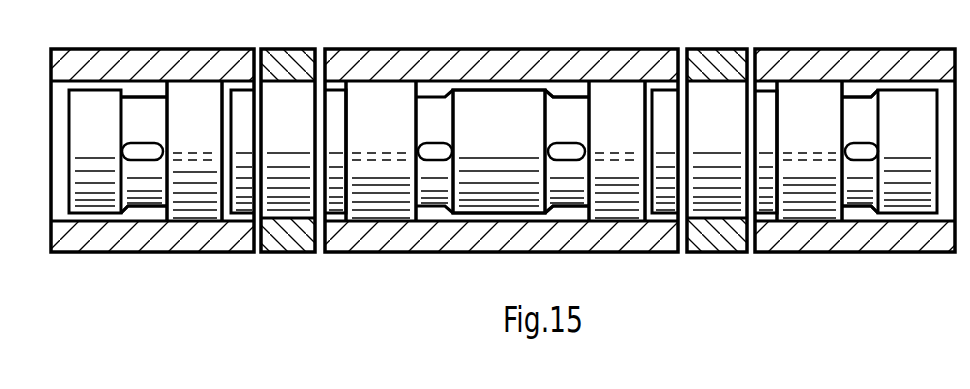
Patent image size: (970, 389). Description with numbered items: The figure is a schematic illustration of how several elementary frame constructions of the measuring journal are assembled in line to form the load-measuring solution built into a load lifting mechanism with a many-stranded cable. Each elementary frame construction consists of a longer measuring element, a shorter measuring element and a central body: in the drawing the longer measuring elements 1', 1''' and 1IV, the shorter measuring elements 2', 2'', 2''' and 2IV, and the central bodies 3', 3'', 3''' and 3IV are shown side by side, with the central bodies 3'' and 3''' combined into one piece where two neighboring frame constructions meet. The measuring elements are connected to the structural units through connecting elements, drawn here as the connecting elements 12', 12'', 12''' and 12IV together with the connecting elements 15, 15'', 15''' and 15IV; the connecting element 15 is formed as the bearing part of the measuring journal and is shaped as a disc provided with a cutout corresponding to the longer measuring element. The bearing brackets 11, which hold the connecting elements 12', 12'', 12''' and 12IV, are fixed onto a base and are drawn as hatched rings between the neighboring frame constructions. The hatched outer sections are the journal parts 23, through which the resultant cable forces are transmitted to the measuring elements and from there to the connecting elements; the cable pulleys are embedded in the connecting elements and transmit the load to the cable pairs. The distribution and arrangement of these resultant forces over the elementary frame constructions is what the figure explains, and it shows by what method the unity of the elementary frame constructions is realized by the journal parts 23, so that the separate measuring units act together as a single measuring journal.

The longer measuring element 1' is at (146, 193).
The longer measuring element 1''' is at (567, 189).
The longer measuring element 1IV is at (860, 193).
The shorter measuring element 2' is at (144, 115).
The shorter measuring element 2'' is at (435, 115).
The shorter measuring element 2''' is at (567, 115).
The shorter measuring element 2IV is at (868, 107).
The central body 3' is at (95, 189).
The central body 3'' is at (498, 189).
The central body 3''' is at (499, 189).
The central body 3IV is at (912, 203).
The bearing bracket 11 is at (277, 63).
The connecting element 12' is at (261, 189).
The connecting element 12'' is at (319, 189).
The connecting element 12''' is at (659, 189).
The connecting element 12IV is at (724, 190).
The connecting element 15 is at (194, 119).
The connecting element 15'' is at (381, 119).
The connecting element 15''' is at (623, 119).
The connecting element 15IV is at (810, 98).
The journal part 23 is at (98, 60).